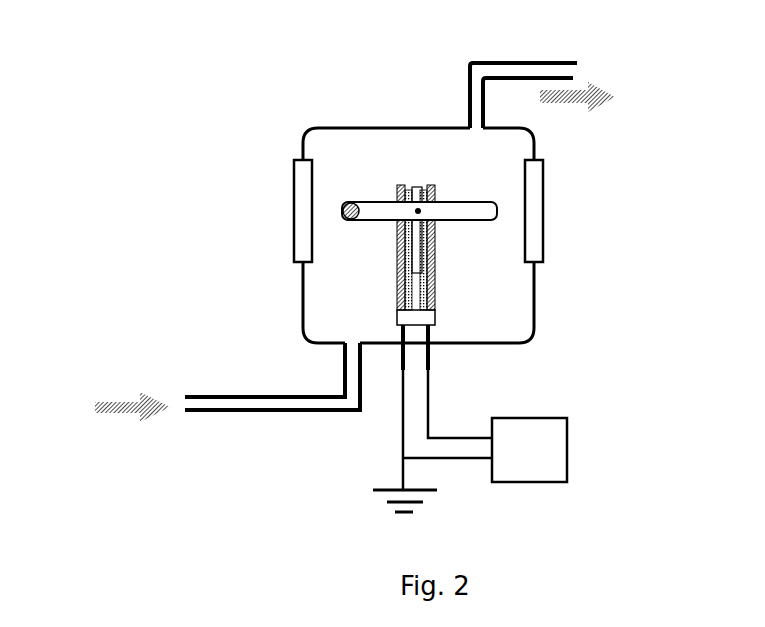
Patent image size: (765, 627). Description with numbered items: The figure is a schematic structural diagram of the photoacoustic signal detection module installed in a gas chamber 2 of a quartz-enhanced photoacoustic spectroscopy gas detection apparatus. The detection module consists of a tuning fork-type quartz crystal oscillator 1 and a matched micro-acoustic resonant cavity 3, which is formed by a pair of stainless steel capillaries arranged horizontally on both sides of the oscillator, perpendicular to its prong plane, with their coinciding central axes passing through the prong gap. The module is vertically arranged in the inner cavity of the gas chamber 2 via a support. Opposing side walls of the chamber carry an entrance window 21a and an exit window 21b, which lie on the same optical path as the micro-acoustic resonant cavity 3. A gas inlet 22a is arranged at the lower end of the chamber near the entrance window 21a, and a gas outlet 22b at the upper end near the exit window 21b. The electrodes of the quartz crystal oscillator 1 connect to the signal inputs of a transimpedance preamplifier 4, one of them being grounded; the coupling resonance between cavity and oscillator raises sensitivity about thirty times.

The tuning fork-type quartz crystal oscillator 1 is at (398, 282).
The gas chamber 2 is at (347, 128).
The micro-acoustic resonant cavity 3 is at (462, 202).
The transimpedance preamplifier 4 is at (529, 450).
The entrance window 21a is at (293, 167).
The exit window 21b is at (543, 248).
The gas inlet 22a is at (265, 395).
The gas outlet 22b is at (517, 62).